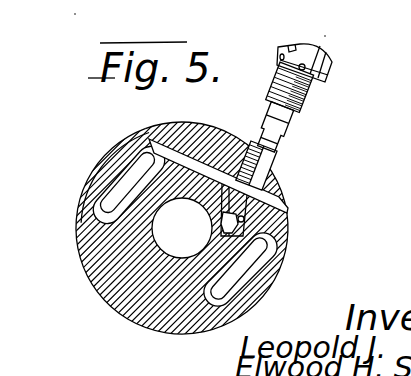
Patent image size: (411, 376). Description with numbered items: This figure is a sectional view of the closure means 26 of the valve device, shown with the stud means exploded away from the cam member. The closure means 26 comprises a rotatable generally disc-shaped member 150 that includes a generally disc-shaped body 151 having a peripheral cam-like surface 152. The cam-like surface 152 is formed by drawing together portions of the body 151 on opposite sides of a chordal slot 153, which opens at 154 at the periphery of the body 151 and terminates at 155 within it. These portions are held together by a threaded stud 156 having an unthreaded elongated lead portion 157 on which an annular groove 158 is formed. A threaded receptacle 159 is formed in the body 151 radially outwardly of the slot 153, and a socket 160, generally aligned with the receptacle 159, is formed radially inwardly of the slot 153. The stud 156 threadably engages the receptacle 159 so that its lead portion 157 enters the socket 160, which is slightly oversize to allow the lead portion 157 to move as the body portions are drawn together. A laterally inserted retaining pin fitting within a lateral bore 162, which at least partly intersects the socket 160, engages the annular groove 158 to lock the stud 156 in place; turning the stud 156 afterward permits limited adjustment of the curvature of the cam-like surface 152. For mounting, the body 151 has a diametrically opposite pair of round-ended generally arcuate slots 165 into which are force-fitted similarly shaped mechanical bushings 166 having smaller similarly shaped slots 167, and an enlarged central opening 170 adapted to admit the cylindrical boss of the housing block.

The closure means 26 is at (100, 301).
The rotatable generally disc-shaped member 150 is at (105, 147).
The generally disc-shaped body 151 is at (107, 163).
The peripheral cam-like surface 152 is at (222, 126).
The chordal slot 153 is at (178, 142).
The opening of the chordal slot 154 is at (285, 203).
The termination of the chordal slot 155 is at (147, 140).
The threaded stud 156 is at (331, 68).
The unthreaded elongated lead portion 157 is at (288, 123).
The annular groove 158 is at (277, 138).
The threaded receptacle 159 is at (268, 167).
The socket 160 is at (230, 206).
The lateral bore 162 is at (245, 219).
The round-ended generally arcuate slots 165 is at (137, 198).
The mechanical bushings 166 is at (101, 220).
The smaller similarly shaped slots 167 is at (122, 174).
The enlarged central opening 170 is at (178, 258).